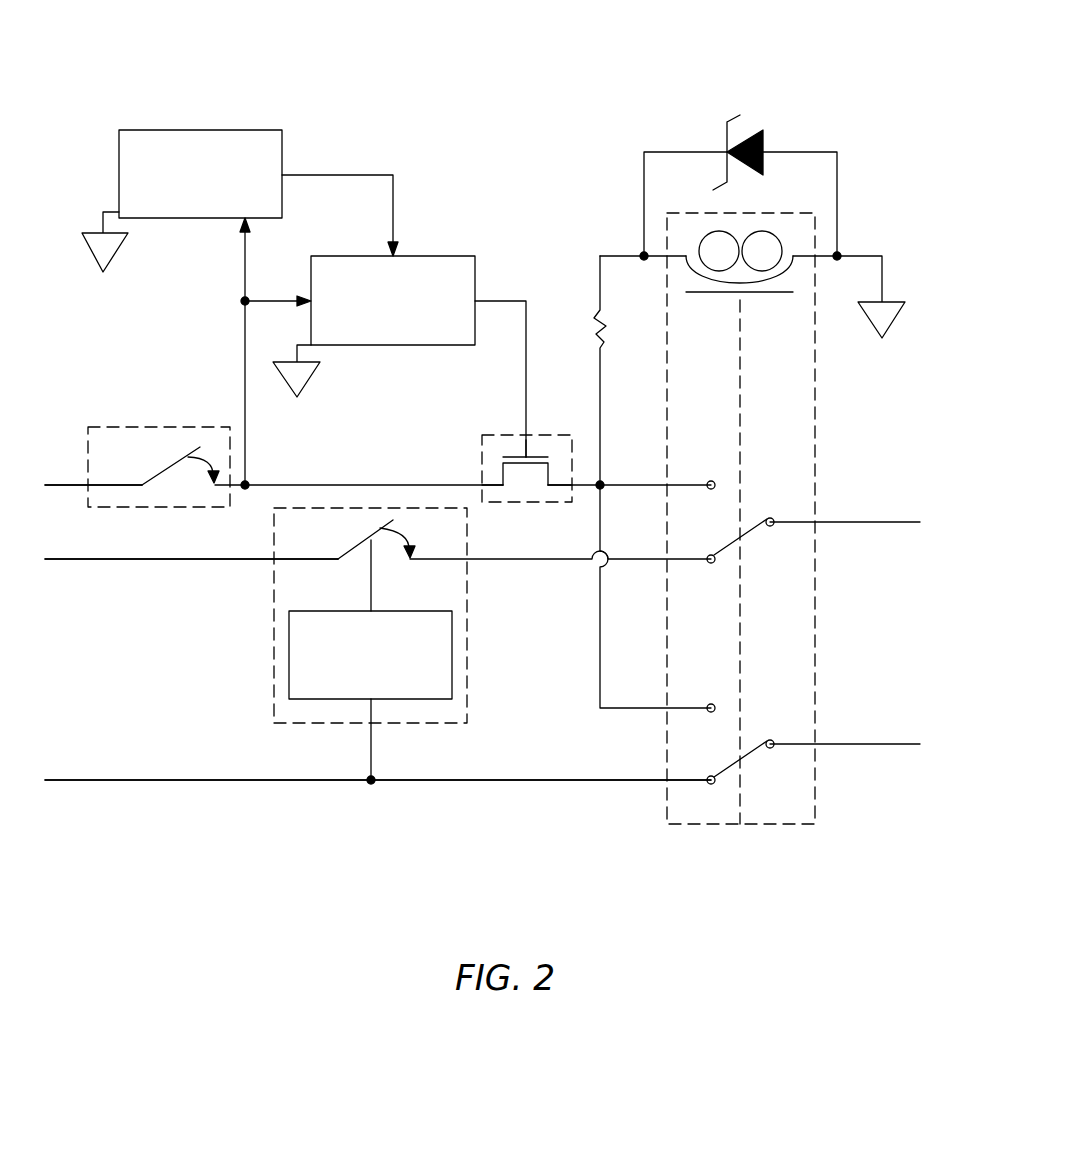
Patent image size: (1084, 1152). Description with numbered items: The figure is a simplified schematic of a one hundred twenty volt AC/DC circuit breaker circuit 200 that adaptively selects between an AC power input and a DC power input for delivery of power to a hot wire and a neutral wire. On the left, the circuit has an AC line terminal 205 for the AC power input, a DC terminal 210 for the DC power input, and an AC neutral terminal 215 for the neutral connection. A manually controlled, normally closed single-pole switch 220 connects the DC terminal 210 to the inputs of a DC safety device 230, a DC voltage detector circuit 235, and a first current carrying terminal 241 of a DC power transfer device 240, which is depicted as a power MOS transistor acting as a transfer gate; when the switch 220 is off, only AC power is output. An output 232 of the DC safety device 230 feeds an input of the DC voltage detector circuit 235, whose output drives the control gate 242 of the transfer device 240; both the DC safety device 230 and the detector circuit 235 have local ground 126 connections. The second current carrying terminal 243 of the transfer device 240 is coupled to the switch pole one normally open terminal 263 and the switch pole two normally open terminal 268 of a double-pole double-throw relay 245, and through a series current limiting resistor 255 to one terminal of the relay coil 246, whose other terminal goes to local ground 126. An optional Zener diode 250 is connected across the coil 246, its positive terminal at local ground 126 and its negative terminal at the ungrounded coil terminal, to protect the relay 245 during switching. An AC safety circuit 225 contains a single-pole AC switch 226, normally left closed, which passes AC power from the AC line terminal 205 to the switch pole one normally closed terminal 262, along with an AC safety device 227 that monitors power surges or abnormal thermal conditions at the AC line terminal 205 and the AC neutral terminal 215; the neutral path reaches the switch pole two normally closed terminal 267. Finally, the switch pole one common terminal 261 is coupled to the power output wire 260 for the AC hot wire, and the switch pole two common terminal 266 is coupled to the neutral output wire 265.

The 120V AC/DC circuit breaker circuit 200 is at (860, 58).
The AC line terminal 205 is at (58, 560).
The DC terminal 210 is at (58, 486).
The AC neutral terminal 215 is at (58, 781).
The single-pole switch 220 is at (200, 426).
The AC safety circuit 225 is at (274, 620).
The single-pole AC switch 226 is at (360, 543).
The AC safety device 227 is at (386, 611).
The DC safety device 230 is at (233, 130).
The output 232 is at (320, 175).
The DC voltage detector circuit 235 is at (423, 256).
The DC power transfer device 240 is at (503, 436).
The first current carrying terminal 241 is at (500, 480).
The control gate 242 is at (533, 455).
The second current carrying terminal 243 is at (547, 470).
The double-pole double-throw relay 245 is at (816, 360).
The coil 246 is at (727, 300).
The Zener diode 250 is at (725, 138).
The current limiting resistor 255 is at (598, 330).
The power output wire 260 is at (918, 521).
The switch pole 1 common terminal 261 is at (773, 517).
The switch pole 1 normally closed terminal 262 is at (709, 555).
The switch pole 1 normally open terminal 263 is at (706, 485).
The neutral output wire 265 is at (918, 743).
The switch pole 2 common terminal 266 is at (773, 739).
The switch pole 2 normally closed terminal 267 is at (709, 777).
The switch pole 2 normally open terminal 268 is at (706, 708).
The local ground 126 is at (121, 252).